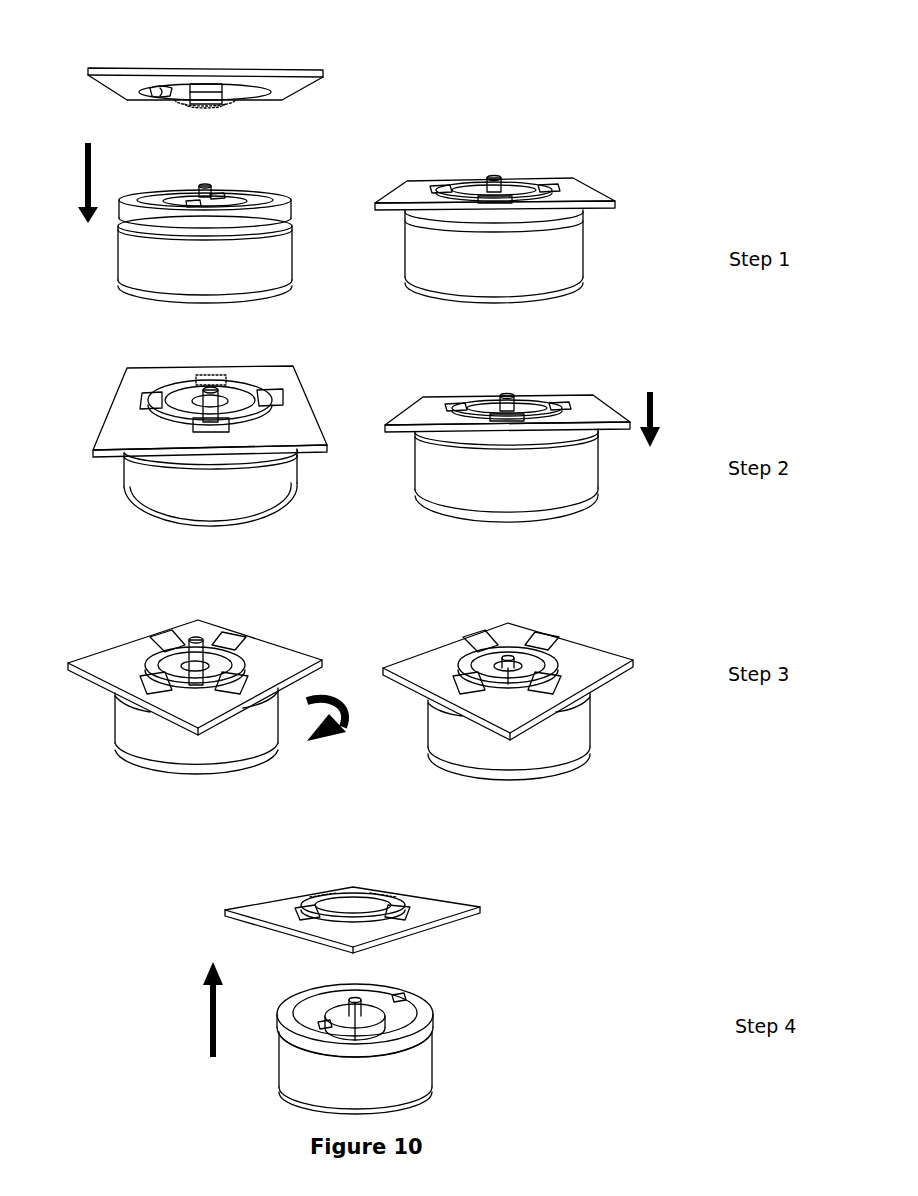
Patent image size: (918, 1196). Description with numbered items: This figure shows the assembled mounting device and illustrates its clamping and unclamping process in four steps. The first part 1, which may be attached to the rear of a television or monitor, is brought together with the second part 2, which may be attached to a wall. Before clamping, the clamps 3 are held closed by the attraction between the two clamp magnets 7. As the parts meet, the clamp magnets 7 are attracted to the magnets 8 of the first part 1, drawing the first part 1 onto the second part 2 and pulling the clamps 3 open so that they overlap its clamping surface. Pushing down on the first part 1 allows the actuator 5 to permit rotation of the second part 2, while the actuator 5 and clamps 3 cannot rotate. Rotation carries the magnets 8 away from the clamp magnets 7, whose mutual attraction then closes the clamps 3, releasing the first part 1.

The first part 1 is at (290, 64).
The second part 2 is at (298, 207).
The clamps 3 is at (238, 194).
The actuator 5 is at (134, 263).
The clamp magnets 7 is at (194, 204).
The magnets of the first part 8 is at (212, 109).